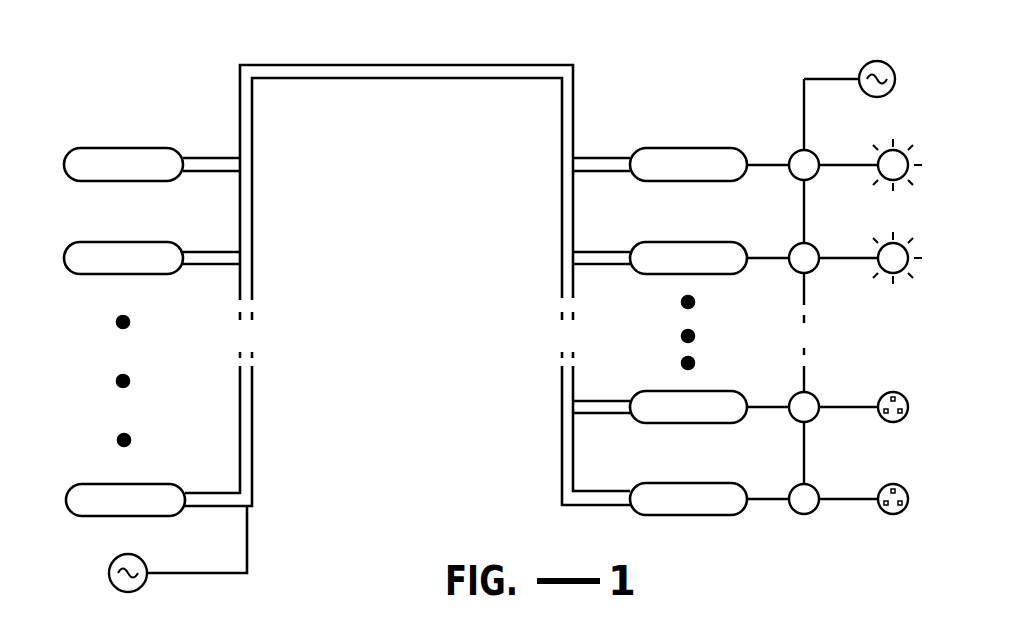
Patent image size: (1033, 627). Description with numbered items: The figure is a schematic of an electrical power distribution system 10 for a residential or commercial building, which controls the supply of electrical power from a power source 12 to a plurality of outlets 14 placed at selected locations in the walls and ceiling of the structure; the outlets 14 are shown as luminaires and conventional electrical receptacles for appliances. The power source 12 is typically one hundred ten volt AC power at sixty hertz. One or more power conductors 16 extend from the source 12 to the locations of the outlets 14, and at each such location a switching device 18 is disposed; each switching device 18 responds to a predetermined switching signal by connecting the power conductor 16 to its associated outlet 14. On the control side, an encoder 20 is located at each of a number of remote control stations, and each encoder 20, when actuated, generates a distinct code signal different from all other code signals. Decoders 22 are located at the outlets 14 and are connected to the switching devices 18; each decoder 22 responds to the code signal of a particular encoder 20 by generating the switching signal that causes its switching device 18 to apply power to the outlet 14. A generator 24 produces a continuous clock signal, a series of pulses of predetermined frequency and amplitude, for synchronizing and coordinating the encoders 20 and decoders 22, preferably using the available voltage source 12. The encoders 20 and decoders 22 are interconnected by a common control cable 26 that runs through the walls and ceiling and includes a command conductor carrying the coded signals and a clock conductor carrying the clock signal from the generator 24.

The electrical power distribution system 10 is at (226, 78).
The power source 12 is at (885, 95).
The outlets 14 is at (903, 179).
The power conductors 16 is at (803, 98).
The switching device 18 is at (815, 179).
The encoder 20 is at (147, 313).
The decoders 22 is at (681, 313).
The generator 24 is at (109, 571).
The common control cable 26 is at (259, 246).